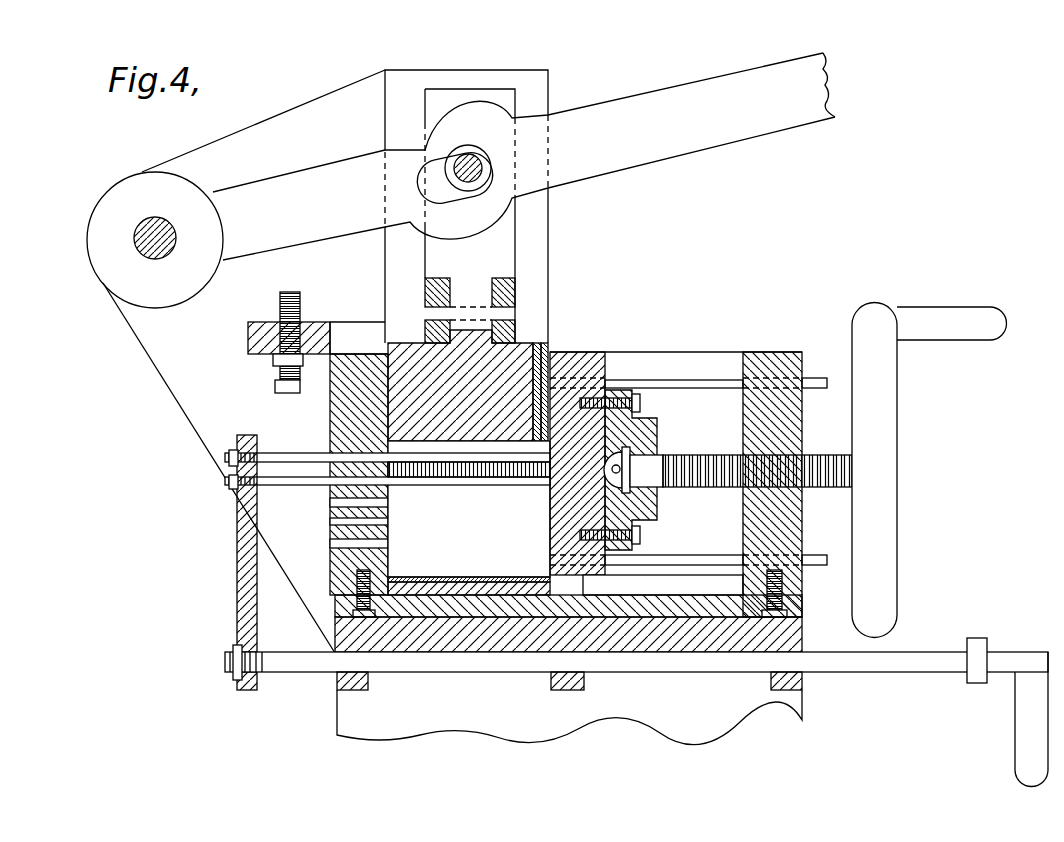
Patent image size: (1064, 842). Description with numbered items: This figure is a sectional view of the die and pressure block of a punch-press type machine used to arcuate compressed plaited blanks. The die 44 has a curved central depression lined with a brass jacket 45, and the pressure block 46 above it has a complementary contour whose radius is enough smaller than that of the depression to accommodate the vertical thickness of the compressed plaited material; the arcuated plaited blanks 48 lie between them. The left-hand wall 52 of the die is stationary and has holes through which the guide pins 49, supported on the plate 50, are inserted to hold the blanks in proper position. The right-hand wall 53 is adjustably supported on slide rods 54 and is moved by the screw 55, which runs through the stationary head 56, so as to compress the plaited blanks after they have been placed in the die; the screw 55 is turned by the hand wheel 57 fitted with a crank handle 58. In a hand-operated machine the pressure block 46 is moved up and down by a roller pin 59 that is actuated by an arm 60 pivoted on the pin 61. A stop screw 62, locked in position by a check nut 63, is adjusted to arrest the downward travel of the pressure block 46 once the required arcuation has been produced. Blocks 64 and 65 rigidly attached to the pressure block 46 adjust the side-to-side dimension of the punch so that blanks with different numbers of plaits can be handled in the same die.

The die 44 is at (446, 589).
The brass jacket 45 is at (493, 577).
The pressure block 46 is at (538, 337).
The plaited blanks 48 is at (470, 475).
The guide pins 49 is at (312, 452).
The plate 50 is at (237, 585).
The left-hand wall 52 is at (342, 399).
The right-hand wall 53 is at (603, 352).
The slide rods 54 is at (712, 380).
The screw 55 is at (716, 457).
The stationary head 56 is at (800, 410).
The hand wheel 57 is at (885, 423).
The crank handle 58 is at (948, 332).
The roller pin 59 is at (468, 152).
The arm 60 is at (488, 156).
The pin 61 is at (157, 252).
The stop screw 62 is at (296, 309).
The check nut 63 is at (280, 364).
The block 64 is at (560, 343).
The block 65 is at (548, 330).